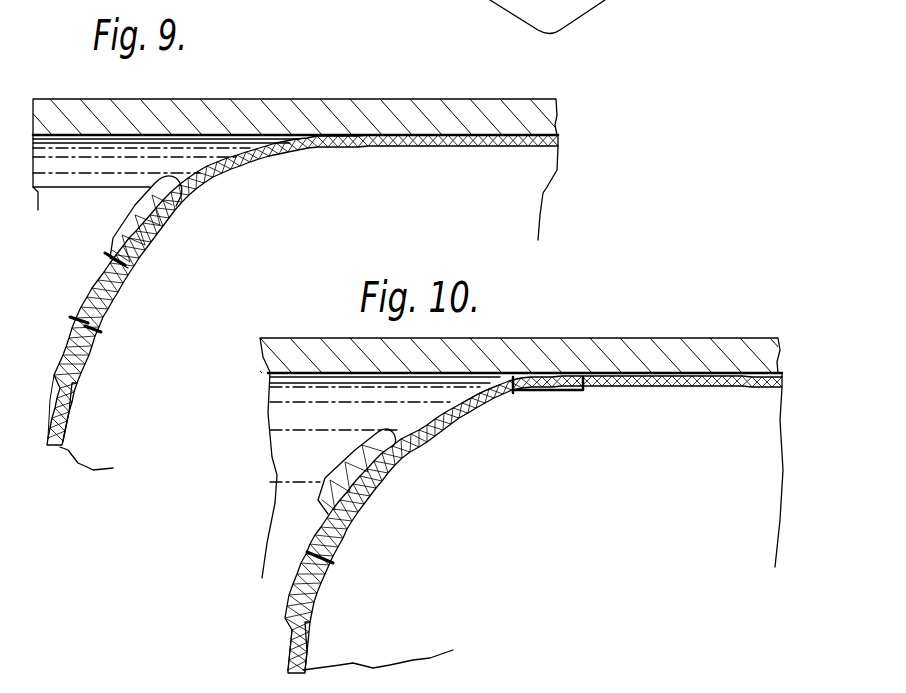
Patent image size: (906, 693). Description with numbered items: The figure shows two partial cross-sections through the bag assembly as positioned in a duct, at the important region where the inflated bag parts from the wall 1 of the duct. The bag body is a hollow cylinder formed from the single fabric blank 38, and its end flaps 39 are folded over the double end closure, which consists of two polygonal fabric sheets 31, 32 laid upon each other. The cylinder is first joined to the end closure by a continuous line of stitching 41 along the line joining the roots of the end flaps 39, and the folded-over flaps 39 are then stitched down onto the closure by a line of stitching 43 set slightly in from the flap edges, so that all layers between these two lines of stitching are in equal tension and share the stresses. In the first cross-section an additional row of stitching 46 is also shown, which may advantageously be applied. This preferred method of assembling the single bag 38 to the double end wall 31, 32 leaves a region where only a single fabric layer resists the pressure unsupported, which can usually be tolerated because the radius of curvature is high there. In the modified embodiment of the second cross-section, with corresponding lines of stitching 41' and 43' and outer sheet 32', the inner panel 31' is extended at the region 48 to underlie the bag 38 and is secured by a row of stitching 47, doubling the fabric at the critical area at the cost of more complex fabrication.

In FIG. 9, the wall 1 is at (272, 112).
In FIG. 10, the wall 1 is at (571, 356).
In FIG. 9, the fabric blank 38 is at (288, 143).
In FIG. 10, the fabric blank 38 is at (469, 388).
In FIG. 9, the line of stitching 41 is at (174, 222).
In FIG. 9, the additional row of stitching 46 is at (128, 267).
In FIG. 9, the line of stitching 43 is at (60, 296).
In FIG. 9, the end flaps 39 is at (100, 318).
In FIG. 9, the sheet 32 is at (39, 385).
In FIG. 9, the sheet 31 is at (93, 412).
In FIG. 10, the row of stitching 47 is at (515, 393).
In FIG. 10, the region 48 is at (468, 405).
In FIG. 10, the line of stitching 41' is at (395, 473).
In FIG. 10, the line of stitching 43' is at (360, 549).
In FIG. 10, the sheet 32' is at (253, 649).
In FIG. 10, the inner panel 31' is at (339, 646).